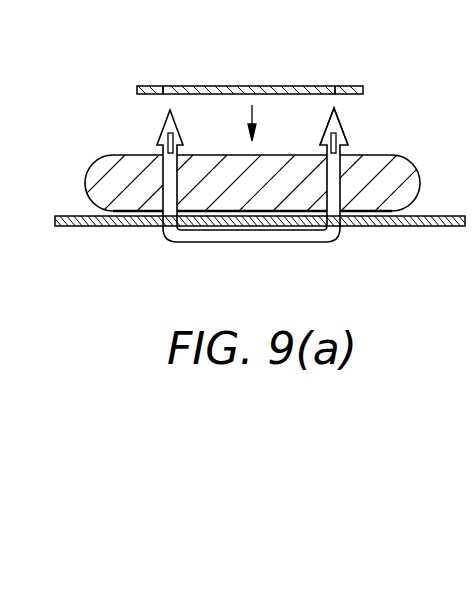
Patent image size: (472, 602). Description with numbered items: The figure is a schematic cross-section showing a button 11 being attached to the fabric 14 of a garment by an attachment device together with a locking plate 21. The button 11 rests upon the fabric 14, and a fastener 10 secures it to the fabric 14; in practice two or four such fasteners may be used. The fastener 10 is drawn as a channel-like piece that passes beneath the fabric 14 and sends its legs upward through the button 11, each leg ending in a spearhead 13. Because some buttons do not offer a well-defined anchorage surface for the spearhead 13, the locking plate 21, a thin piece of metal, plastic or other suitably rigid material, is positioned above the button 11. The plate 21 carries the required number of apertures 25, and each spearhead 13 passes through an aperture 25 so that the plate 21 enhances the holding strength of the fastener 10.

The fastener 10 is at (290, 236).
The button 11 is at (113, 172).
The spearhead 13 is at (340, 132).
The fabric 14 is at (90, 226).
The locking plate 21 is at (257, 86).
The aperture 25 is at (163, 88).